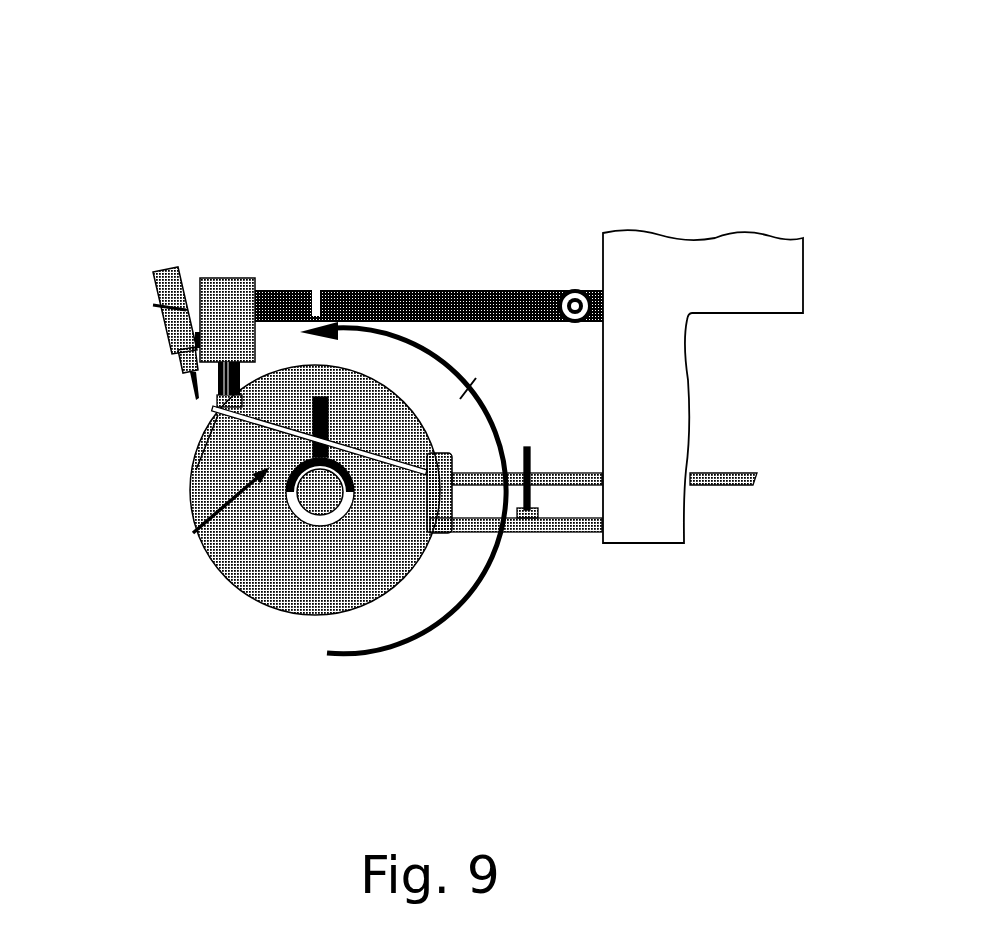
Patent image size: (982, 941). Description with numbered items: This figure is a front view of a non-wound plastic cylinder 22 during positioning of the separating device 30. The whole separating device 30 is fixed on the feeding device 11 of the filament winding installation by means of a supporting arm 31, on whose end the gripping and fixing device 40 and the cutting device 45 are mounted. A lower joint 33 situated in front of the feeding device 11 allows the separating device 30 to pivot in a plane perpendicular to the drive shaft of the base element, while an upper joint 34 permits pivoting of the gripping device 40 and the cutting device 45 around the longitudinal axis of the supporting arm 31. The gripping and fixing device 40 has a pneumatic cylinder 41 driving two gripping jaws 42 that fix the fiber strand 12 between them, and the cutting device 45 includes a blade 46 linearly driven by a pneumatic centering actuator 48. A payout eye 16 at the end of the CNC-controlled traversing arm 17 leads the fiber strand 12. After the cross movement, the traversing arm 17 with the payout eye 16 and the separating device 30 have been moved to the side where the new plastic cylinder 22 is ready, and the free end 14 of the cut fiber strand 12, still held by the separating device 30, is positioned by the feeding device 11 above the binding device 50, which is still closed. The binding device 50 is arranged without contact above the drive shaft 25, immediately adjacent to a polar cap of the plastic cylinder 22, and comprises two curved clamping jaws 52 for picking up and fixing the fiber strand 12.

The feeding device 11 is at (738, 190).
The fiber strand 12 is at (383, 457).
The free end 14 is at (215, 410).
The payout eye 16 is at (440, 535).
The traversing arm 17 is at (582, 532).
The plastic cylinder 22 is at (285, 588).
The drive shaft 25 is at (307, 497).
The separating device 30 is at (437, 163).
The supporting arm 31 is at (505, 290).
The lower joint 33 is at (575, 290).
The upper joint 34 is at (314, 290).
The gripping and fixing device 40 is at (243, 238).
The pneumatic cylinder 41 is at (213, 287).
The gripping jaws 42 is at (195, 470).
The cutting device 45 is at (148, 234).
The blade 46 is at (188, 385).
The pneumatic centering actuator 48 is at (173, 303).
The binding device 50 is at (193, 533).
The clamping jaws 52 is at (290, 493).